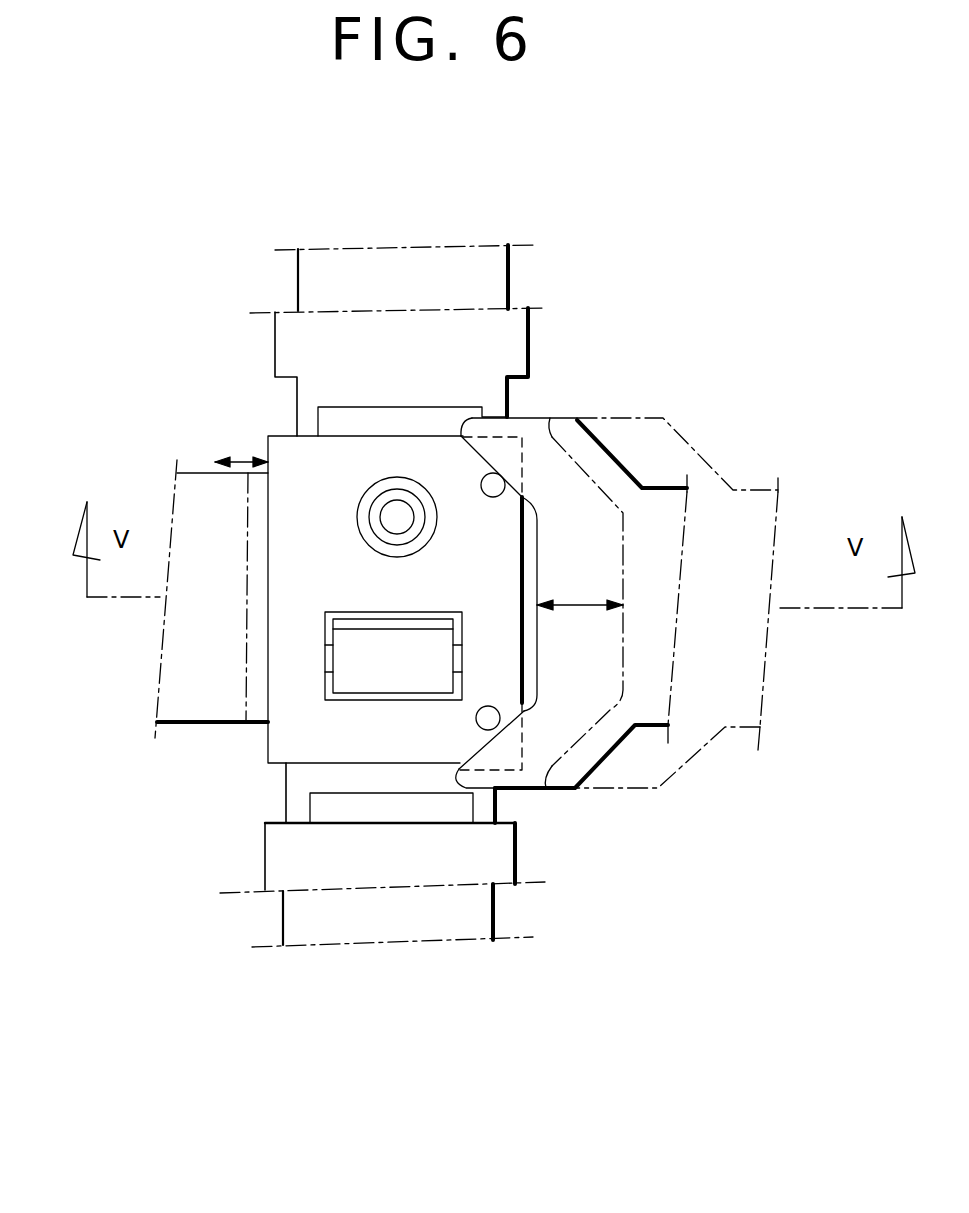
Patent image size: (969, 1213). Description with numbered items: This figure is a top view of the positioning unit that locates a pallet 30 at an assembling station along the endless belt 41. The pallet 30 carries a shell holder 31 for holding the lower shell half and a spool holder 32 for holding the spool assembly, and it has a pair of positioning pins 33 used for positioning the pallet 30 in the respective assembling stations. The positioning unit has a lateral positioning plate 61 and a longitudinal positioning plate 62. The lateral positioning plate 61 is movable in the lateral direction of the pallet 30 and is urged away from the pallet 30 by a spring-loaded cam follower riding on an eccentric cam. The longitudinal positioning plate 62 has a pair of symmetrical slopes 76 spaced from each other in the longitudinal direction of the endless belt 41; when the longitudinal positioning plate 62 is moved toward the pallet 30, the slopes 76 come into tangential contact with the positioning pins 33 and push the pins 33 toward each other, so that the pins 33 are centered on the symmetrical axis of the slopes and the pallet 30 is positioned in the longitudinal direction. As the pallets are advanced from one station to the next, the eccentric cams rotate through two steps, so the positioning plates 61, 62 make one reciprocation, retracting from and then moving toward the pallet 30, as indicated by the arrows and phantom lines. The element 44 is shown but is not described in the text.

The pallet 30 is at (512, 340).
The shell holder 31 is at (378, 613).
The spool holder 32 is at (365, 505).
The positioning pins 33 is at (483, 707).
The endless belt 41 is at (495, 273).
The rib 44 is at (372, 420).
The lateral positioning plate 61 is at (207, 483).
The longitudinal positioning plate 62 is at (533, 428).
The symmetrical slopes 76 is at (480, 453).